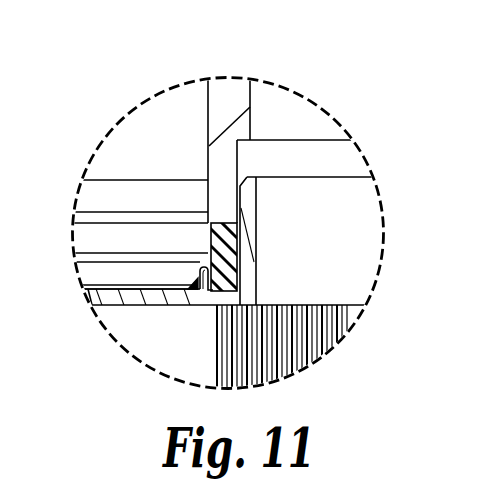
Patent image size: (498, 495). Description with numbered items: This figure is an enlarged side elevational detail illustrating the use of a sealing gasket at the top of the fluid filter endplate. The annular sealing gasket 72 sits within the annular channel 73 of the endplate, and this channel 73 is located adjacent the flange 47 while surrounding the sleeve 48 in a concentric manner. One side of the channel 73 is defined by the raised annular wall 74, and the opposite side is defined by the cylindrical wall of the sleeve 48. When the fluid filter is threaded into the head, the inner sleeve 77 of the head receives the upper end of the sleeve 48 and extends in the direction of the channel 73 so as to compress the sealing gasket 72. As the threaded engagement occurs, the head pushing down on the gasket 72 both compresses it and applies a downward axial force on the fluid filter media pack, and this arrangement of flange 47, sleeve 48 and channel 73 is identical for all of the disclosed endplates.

The flange 47 is at (100, 294).
The sleeve 48 is at (255, 253).
The annular sealing gasket 72 is at (226, 260).
The annular channel 73 is at (226, 293).
The raised annular wall 74 is at (197, 269).
The inner sleeve 77 is at (227, 103).